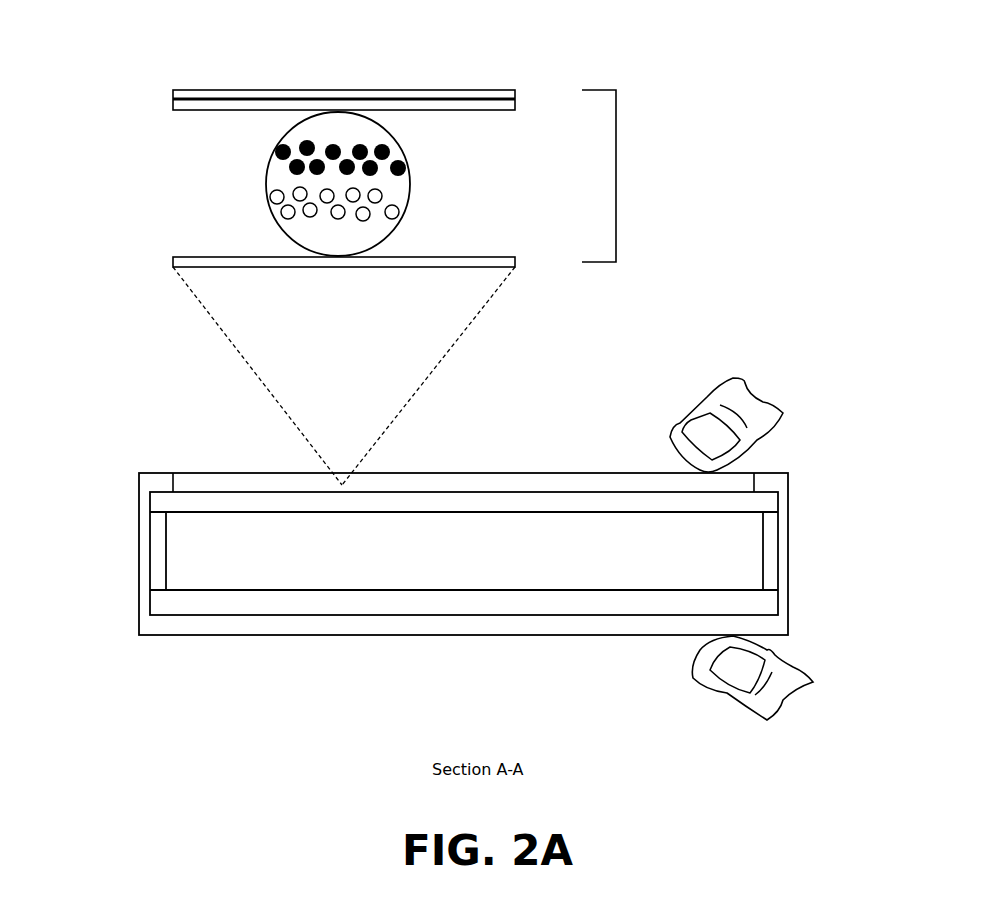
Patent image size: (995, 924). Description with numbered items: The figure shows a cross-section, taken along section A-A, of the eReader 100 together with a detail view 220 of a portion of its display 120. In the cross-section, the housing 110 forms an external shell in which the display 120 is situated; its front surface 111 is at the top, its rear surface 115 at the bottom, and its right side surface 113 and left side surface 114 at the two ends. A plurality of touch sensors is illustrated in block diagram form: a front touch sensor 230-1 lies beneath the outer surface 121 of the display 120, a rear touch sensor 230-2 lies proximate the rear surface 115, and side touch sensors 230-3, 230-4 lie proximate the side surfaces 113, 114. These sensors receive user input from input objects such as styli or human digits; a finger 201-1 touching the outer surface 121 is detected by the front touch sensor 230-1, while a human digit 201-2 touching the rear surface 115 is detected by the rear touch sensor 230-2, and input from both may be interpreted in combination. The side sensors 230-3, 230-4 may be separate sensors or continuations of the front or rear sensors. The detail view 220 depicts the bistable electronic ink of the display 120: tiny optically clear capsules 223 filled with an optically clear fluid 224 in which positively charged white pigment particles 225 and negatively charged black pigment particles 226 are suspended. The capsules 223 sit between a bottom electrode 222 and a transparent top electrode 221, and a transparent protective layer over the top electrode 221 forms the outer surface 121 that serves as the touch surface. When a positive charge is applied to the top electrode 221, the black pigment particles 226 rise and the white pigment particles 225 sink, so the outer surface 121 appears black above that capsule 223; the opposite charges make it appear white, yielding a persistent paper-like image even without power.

The eReader 100 is at (152, 408).
The housing 110 is at (435, 627).
The front surface 111 is at (157, 472).
The right side surface 113 is at (790, 517).
The left side surface 114 is at (136, 513).
The rear surface 115 is at (498, 640).
The display 120 is at (616, 175).
The outer surface 121 is at (472, 470).
The finger 201-1 is at (757, 442).
The human digit 201-2 is at (740, 708).
The detail view 220 is at (108, 164).
The top electrode 221 is at (480, 110).
The bottom electrode 222 is at (498, 255).
The capsule 223 is at (280, 237).
The optically clear fluid 224 is at (345, 232).
The white pigment particles 225 is at (275, 190).
The black pigment particles 226 is at (398, 180).
The front touch sensor 230-1 is at (502, 505).
The rear touch sensor 230-2 is at (385, 607).
The side touch sensor 230-3 is at (770, 555).
The side touch sensor 230-4 is at (157, 553).